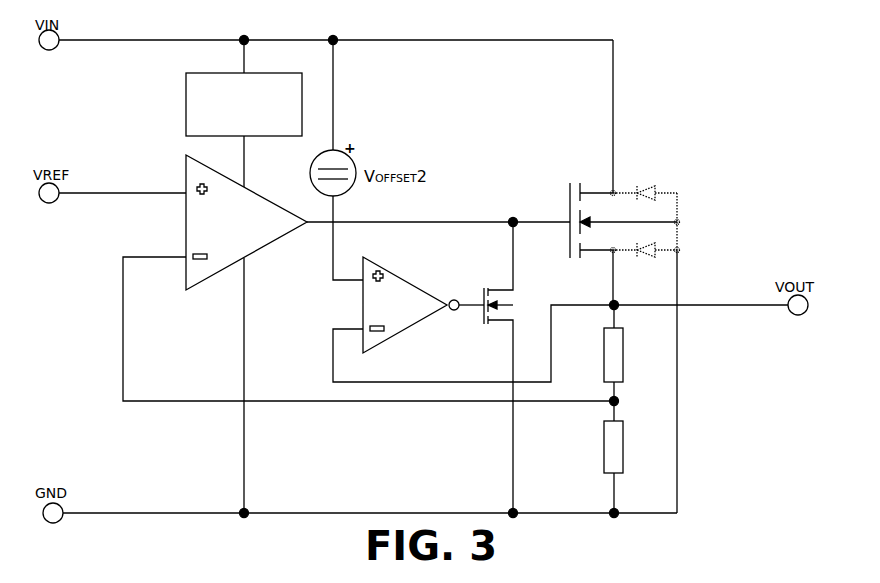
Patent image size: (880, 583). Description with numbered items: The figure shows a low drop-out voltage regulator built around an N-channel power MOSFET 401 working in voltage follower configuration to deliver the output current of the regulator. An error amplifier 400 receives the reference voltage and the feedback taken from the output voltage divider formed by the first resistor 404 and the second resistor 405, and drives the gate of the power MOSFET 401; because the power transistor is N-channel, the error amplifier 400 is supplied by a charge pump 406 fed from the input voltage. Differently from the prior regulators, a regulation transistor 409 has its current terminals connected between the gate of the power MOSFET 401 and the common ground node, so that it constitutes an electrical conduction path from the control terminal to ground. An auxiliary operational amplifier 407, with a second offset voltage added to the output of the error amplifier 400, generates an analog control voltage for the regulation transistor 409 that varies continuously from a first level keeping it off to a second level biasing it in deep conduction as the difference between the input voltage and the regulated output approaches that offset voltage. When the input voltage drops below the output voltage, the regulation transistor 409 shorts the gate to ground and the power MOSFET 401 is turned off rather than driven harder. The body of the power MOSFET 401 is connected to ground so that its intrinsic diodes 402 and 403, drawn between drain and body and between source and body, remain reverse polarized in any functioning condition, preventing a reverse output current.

The error amplifier 400 is at (245, 235).
The N-channel power MOSFET 401 is at (601, 241).
The intrinsic diode 402 is at (645, 196).
The intrinsic diode 403 is at (645, 255).
The resistor R1 404 is at (611, 355).
The resistor R2 405 is at (611, 447).
The charge pump 406 is at (244, 94).
The auxiliary operational amplifier 407 is at (411, 304).
The regulation transistor 409 is at (486, 367).